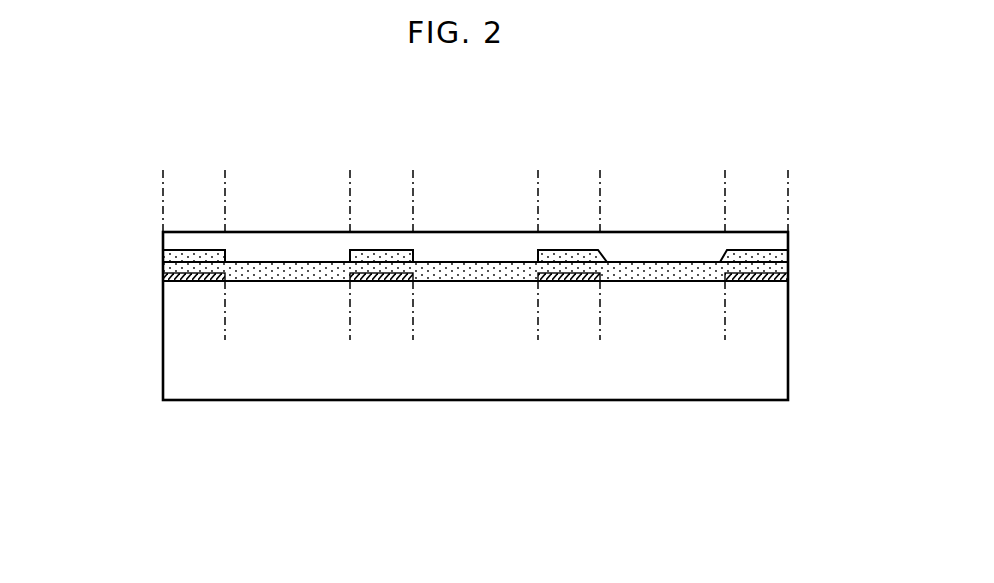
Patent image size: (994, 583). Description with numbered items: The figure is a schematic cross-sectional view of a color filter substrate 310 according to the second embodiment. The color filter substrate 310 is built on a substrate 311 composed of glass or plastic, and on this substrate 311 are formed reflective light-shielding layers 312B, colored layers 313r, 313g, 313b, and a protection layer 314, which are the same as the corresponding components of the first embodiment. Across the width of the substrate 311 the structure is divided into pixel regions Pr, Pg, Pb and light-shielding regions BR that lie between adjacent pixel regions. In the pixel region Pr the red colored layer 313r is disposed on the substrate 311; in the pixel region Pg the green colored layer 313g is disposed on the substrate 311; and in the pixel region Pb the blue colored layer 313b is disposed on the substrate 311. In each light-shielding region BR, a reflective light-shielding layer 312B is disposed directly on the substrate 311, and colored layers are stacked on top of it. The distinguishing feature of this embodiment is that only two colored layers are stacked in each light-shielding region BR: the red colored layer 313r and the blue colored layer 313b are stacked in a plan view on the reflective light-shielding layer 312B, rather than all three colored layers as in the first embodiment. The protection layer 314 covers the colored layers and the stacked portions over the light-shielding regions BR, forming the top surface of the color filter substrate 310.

The color filter substrate 310 is at (508, 99).
The substrate 311 is at (418, 393).
The reflective light-shielding layer 312B is at (187, 281).
The red colored layer 313r is at (288, 262).
The green colored layer 313g is at (470, 262).
The blue colored layer 313b is at (656, 262).
The protection layer 314 is at (783, 243).
The light-shielding region BR is at (225, 170).
The pixel region Pr is at (350, 340).
The pixel region Pg is at (538, 340).
The pixel region Pb is at (725, 340).